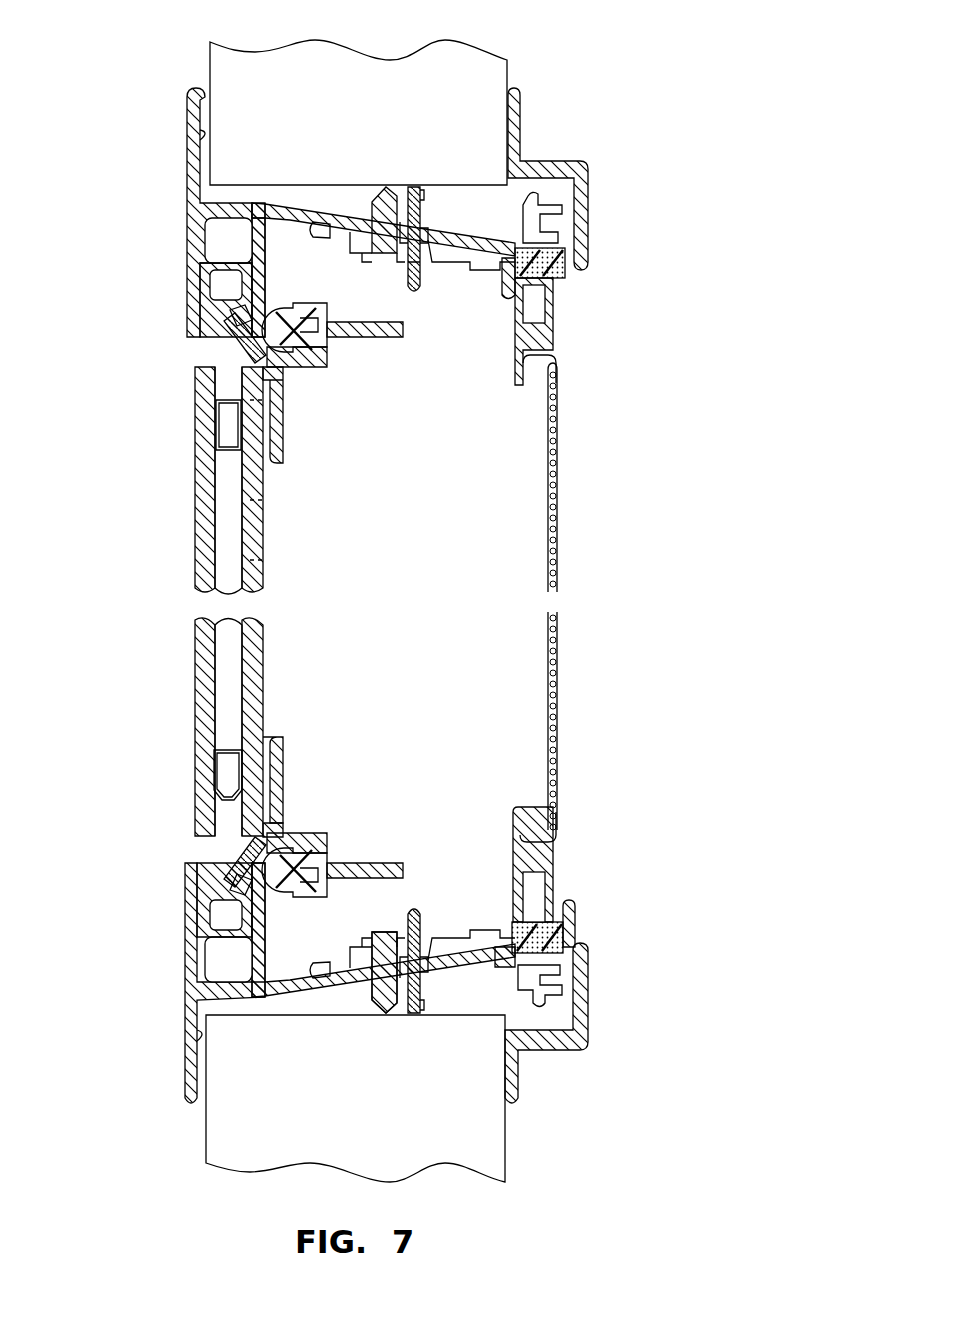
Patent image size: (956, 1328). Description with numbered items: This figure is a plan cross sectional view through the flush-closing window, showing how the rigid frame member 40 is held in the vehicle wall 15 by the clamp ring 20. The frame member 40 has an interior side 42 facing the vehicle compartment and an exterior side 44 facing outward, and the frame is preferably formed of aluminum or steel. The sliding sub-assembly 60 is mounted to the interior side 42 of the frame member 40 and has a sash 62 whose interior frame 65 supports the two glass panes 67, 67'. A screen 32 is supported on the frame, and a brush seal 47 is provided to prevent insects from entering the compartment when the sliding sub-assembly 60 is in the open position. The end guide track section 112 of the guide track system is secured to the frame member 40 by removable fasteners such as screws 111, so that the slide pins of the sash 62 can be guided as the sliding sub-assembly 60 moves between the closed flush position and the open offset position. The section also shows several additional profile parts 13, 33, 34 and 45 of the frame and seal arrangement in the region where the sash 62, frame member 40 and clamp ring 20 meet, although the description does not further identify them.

The vehicle wall 15 is at (510, 70).
The exterior side 44 is at (187, 175).
The frame member 40 is at (245, 240).
The brush seal 47 is at (240, 355).
The connector 13 is at (300, 322).
The end guide track section 112 is at (414, 294).
The gasket 33 is at (530, 282).
The frame post 34 is at (556, 335).
The sash 62 is at (283, 410).
The glass pane 67 is at (171, 601).
The glass pane 67' is at (320, 498).
The screen 32 is at (557, 525).
The sliding sub-assembly 60 is at (185, 650).
The interior frame 65 is at (232, 766).
The interior side 42 is at (571, 925).
The clip 45 is at (560, 982).
The screws 111 is at (390, 1013).
The clamp ring 20 is at (520, 1078).